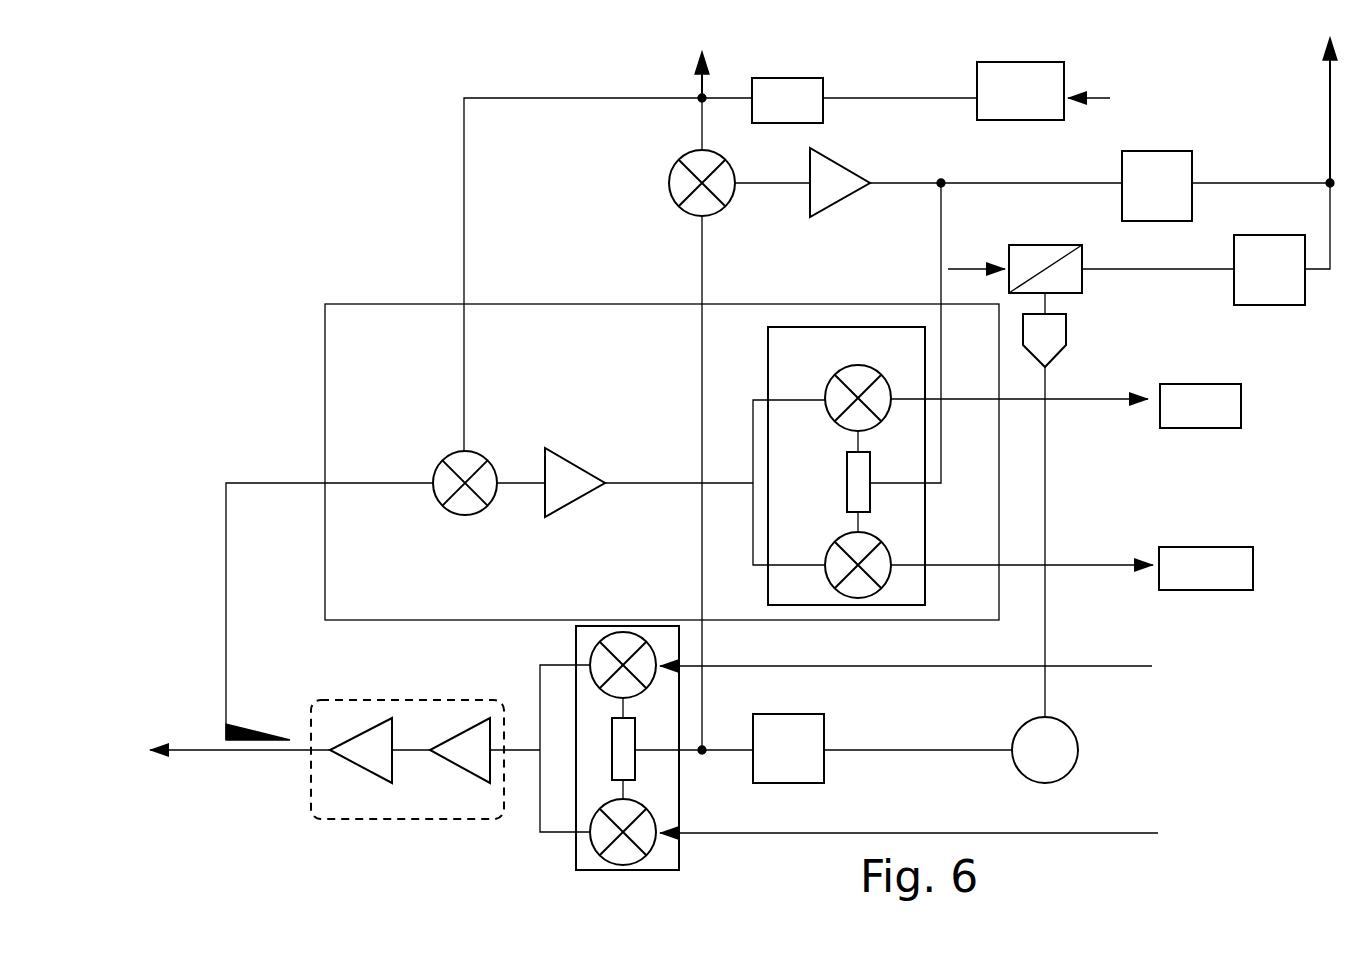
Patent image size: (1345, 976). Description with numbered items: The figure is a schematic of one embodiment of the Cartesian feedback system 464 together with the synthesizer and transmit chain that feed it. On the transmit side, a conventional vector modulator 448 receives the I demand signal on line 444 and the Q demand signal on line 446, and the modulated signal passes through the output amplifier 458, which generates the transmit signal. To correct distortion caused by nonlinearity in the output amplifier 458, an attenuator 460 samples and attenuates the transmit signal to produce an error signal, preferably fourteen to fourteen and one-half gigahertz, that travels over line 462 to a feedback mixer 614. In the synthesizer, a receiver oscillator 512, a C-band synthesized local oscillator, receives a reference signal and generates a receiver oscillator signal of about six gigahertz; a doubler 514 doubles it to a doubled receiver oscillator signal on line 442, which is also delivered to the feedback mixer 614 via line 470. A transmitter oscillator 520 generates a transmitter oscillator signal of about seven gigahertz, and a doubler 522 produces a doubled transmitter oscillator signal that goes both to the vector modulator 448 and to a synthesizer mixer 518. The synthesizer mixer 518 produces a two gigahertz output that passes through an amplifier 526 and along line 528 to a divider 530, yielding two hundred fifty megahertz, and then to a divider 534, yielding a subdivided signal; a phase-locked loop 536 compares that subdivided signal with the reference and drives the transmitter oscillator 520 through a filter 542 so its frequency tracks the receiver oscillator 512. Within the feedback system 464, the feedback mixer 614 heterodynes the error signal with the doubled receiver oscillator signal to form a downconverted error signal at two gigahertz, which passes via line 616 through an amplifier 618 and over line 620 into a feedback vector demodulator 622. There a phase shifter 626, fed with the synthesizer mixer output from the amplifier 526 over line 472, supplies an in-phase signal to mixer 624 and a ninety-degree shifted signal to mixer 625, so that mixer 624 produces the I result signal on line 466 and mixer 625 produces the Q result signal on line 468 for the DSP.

The line 442 is at (706, 78).
The line 444 is at (1084, 651).
The line 446 is at (1082, 833).
The vector modulator 448 is at (679, 855).
The output amplifier 458 is at (392, 700).
The attenuator 460 is at (240, 732).
The line 462 is at (226, 578).
The Cartesian feedback system 464 is at (325, 366).
The line 466 is at (1072, 399).
The line 468 is at (1074, 565).
The line 470 is at (464, 165).
The line 472 is at (964, 440).
The receiver oscillator 512 is at (1064, 75).
The doubler 514 is at (800, 78).
The synthesizer mixer 518 is at (722, 160).
The transmitter oscillator 520 is at (1076, 734).
The doubler 522 is at (824, 728).
The amplifier 526 is at (842, 165).
The line 528 is at (1022, 185).
The divider 530 is at (1160, 151).
The divider 534 is at (1290, 305).
The phase-locked loop 536 is at (1082, 282).
The filter 542 is at (1066, 328).
The feedback mixer 614 is at (446, 458).
The line 616 is at (510, 483).
The amplifier 618 is at (592, 454).
The line 620 is at (660, 485).
The feedback vector demodulator 622 is at (768, 352).
The mixer 624 is at (834, 376).
The mixer 625 is at (834, 546).
The phase shifter 626 is at (847, 487).